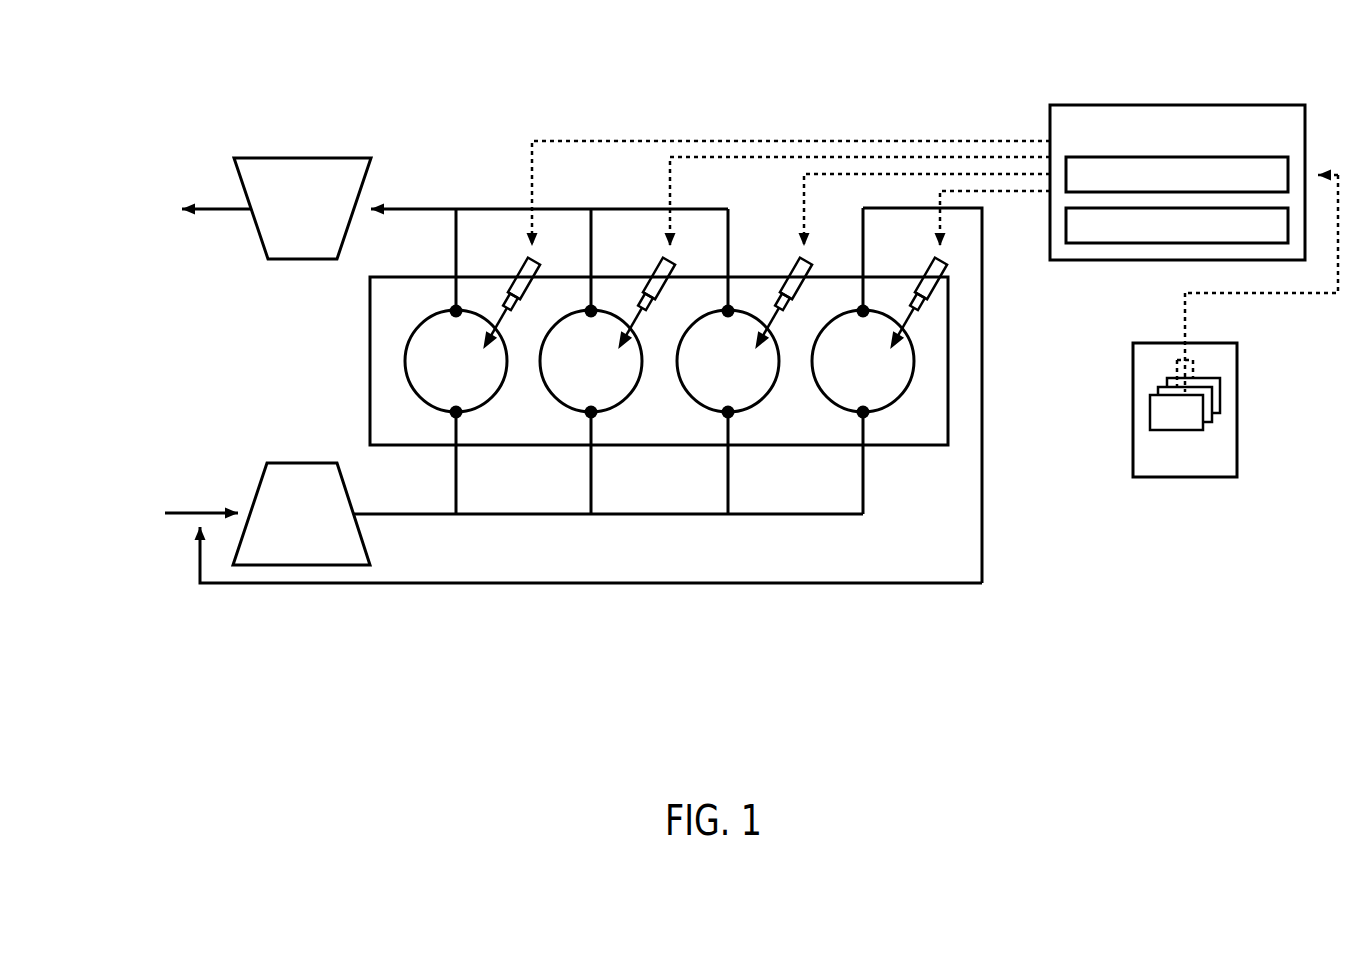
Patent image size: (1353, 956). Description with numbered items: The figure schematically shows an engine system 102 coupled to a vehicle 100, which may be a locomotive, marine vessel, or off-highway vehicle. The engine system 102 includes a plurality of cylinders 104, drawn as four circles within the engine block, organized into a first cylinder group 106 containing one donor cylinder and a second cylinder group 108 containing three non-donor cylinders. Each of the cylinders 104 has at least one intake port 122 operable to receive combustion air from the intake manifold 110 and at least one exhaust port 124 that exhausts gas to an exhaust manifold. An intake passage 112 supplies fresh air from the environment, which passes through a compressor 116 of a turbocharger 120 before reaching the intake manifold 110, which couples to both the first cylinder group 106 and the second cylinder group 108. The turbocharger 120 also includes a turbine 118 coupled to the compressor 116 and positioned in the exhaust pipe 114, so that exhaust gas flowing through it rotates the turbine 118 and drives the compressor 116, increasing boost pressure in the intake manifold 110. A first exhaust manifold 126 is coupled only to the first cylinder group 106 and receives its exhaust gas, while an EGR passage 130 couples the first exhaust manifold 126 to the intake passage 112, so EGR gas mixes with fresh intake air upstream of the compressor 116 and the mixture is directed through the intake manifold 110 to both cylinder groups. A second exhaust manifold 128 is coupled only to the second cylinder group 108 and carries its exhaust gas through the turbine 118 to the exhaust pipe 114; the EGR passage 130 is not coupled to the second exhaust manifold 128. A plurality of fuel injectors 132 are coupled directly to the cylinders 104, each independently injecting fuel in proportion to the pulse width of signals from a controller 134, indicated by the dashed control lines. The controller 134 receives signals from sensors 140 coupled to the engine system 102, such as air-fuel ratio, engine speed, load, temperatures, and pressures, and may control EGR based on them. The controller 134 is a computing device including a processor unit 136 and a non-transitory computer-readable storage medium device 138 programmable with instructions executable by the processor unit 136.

The vehicle 100 is at (114, 71).
The engine system 102 is at (675, 437).
The plurality of cylinders 104 is at (879, 375).
The first cylinder group 106 is at (999, 309).
The second cylinder group 108 is at (361, 332).
The intake manifold 110 is at (840, 517).
The intake passage 112 is at (175, 515).
The exhaust pipe 114 is at (202, 211).
The compressor 116 is at (319, 527).
The turbine 118 is at (317, 222).
The turbocharger 120 is at (207, 156).
The intake port 122 is at (454, 416).
The exhaust port 124 is at (454, 307).
The first exhaust manifold 126 is at (888, 208).
The second exhaust manifold 128 is at (440, 208).
The EGR passage 130 is at (983, 506).
The fuel injectors 132 is at (934, 259).
The controller 134 is at (1258, 140).
The processor unit 136 is at (1253, 186).
The computer-readable storage medium device 138 is at (1277, 237).
The sensors 140 is at (1202, 467).